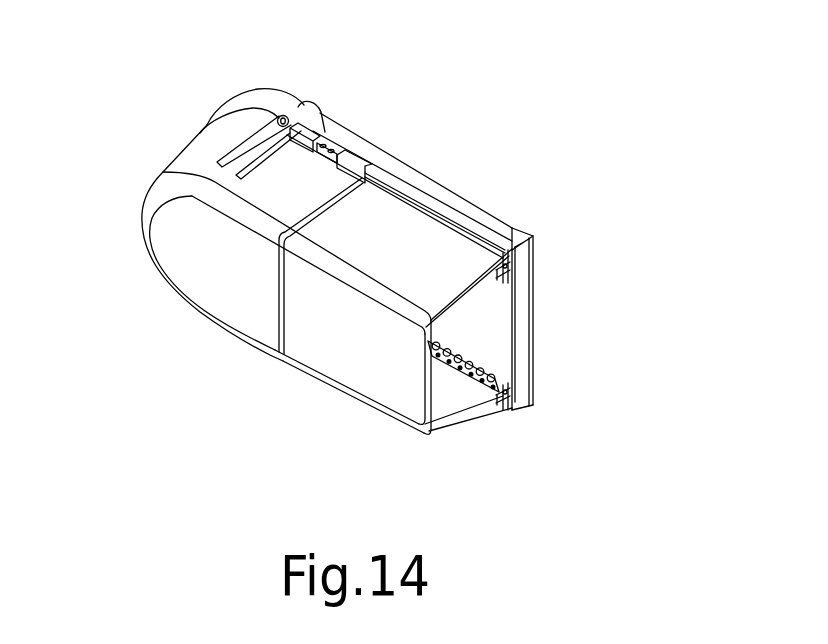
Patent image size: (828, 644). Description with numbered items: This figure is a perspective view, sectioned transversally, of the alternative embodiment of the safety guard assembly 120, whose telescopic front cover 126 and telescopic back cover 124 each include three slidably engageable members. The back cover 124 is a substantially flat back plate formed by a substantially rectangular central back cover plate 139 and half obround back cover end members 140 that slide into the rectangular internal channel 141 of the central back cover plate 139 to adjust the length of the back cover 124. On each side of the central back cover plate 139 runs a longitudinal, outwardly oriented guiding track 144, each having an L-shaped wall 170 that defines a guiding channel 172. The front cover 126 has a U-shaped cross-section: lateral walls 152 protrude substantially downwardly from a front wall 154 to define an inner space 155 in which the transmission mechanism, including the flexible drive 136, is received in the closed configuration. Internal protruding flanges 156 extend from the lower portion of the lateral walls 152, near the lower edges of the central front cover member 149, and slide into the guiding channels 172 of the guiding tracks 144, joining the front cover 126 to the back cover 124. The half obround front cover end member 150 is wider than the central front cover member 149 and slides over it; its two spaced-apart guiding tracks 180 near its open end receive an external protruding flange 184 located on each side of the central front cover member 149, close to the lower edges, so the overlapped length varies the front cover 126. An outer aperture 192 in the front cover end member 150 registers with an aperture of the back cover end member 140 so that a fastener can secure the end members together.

The safety guard assembly 120 is at (265, 345).
The back cover 124 is at (468, 212).
The front cover 126 is at (318, 329).
The flexible drive 136 is at (453, 377).
The central back cover plate 139 is at (416, 180).
The back cover end member 140 is at (255, 96).
The internal channel 141 is at (519, 342).
The guiding track 144 is at (518, 284).
The central front cover member 149 is at (385, 370).
The front cover end member 150 is at (205, 263).
The lateral wall 152 is at (433, 282).
The front wall 154 is at (406, 344).
The inner space 155 is at (437, 398).
The internal protruding flange 156 is at (505, 265).
The L-shaped wall 170 is at (508, 283).
The guiding channel 172 is at (507, 272).
The guiding track 180 is at (322, 141).
The external protruding flange 184 is at (340, 156).
The outer aperture 192 is at (288, 115).